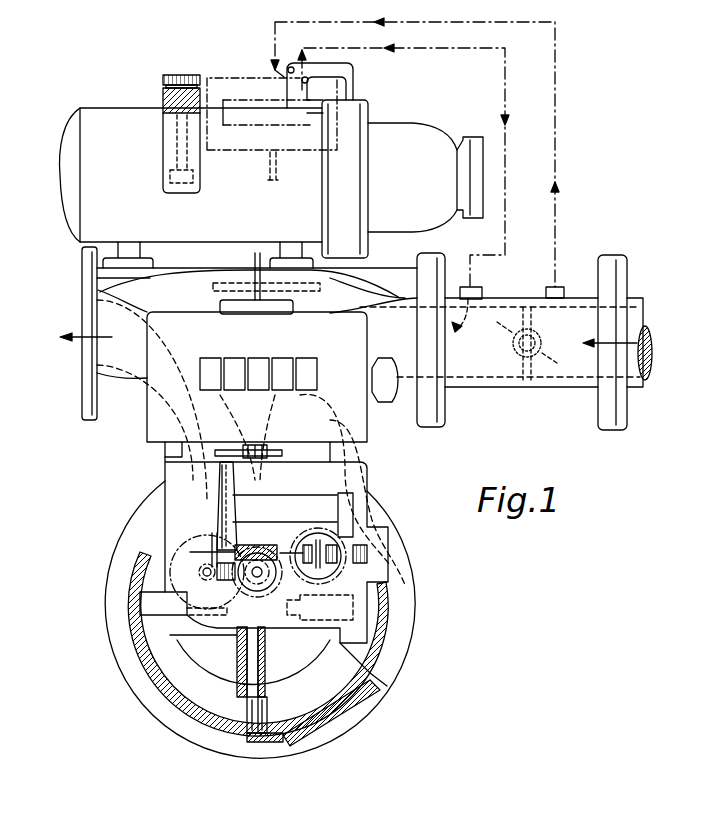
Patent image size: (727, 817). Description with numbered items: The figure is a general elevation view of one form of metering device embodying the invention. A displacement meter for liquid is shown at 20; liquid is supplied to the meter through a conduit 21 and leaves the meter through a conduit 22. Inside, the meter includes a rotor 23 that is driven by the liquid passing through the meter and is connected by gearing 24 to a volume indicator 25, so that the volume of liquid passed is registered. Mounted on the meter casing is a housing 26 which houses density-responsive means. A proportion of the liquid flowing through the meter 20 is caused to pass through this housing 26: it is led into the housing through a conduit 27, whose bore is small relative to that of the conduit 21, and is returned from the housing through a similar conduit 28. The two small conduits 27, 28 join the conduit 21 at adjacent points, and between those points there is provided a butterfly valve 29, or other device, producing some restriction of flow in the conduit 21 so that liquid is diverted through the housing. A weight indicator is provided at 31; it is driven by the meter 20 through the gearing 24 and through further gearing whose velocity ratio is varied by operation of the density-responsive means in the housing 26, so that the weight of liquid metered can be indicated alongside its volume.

The displacement meter 20 is at (415, 598).
The conduit 21 is at (580, 388).
The conduit 22 is at (127, 368).
The rotor 23 is at (198, 673).
The gearing 24 is at (212, 473).
The volume indicator 25 is at (157, 433).
The housing 26 is at (130, 116).
The conduit 27 is at (555, 232).
The conduit 28 is at (505, 232).
The butterfly valve 29 is at (530, 382).
The weight indicator 31 is at (252, 82).